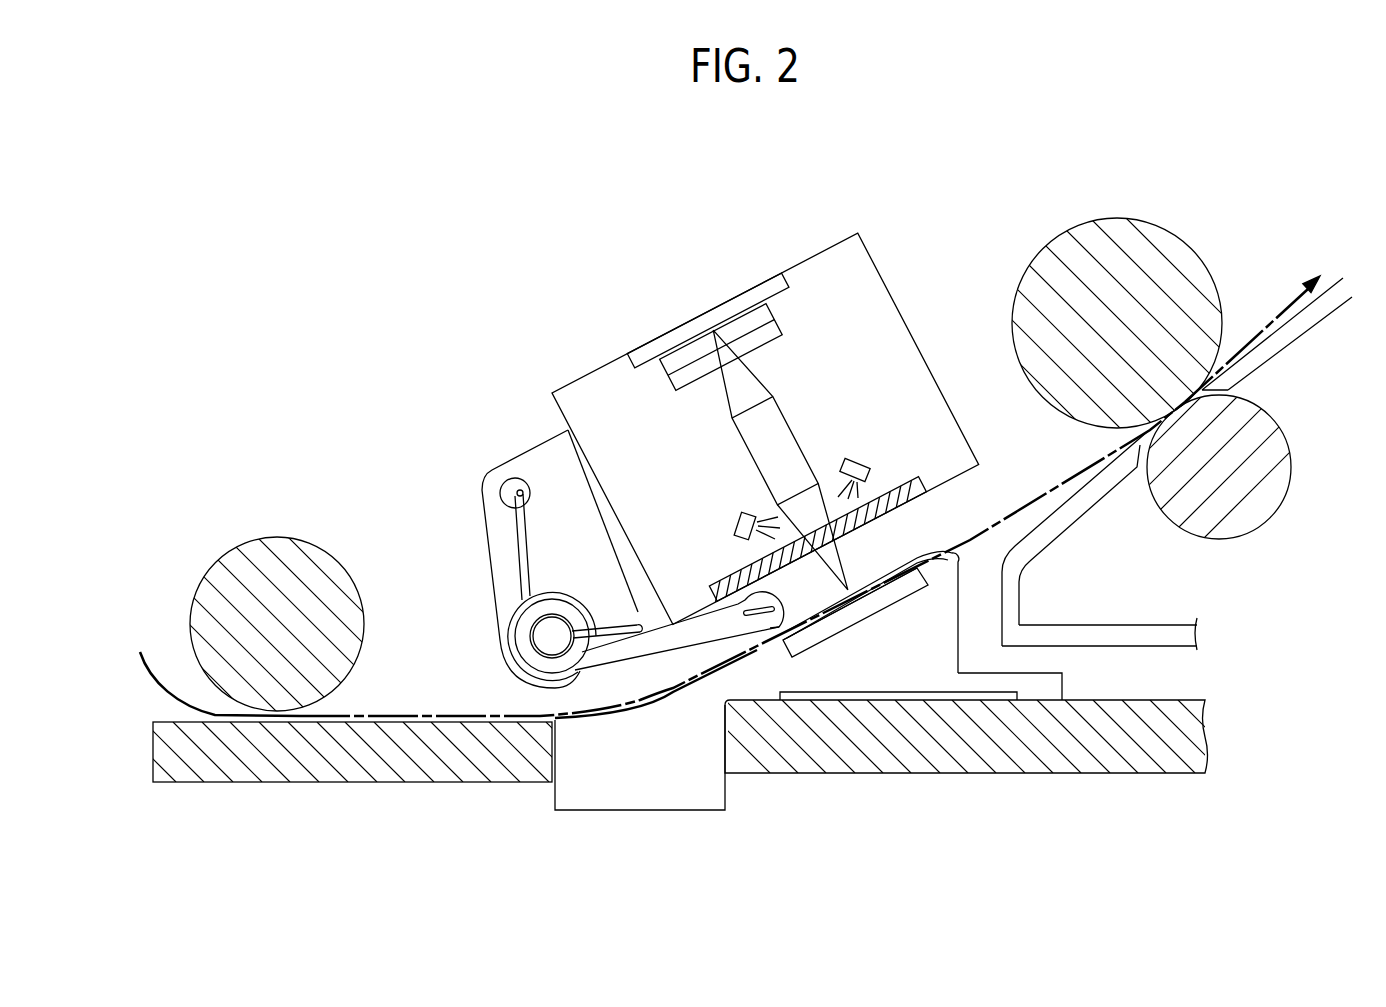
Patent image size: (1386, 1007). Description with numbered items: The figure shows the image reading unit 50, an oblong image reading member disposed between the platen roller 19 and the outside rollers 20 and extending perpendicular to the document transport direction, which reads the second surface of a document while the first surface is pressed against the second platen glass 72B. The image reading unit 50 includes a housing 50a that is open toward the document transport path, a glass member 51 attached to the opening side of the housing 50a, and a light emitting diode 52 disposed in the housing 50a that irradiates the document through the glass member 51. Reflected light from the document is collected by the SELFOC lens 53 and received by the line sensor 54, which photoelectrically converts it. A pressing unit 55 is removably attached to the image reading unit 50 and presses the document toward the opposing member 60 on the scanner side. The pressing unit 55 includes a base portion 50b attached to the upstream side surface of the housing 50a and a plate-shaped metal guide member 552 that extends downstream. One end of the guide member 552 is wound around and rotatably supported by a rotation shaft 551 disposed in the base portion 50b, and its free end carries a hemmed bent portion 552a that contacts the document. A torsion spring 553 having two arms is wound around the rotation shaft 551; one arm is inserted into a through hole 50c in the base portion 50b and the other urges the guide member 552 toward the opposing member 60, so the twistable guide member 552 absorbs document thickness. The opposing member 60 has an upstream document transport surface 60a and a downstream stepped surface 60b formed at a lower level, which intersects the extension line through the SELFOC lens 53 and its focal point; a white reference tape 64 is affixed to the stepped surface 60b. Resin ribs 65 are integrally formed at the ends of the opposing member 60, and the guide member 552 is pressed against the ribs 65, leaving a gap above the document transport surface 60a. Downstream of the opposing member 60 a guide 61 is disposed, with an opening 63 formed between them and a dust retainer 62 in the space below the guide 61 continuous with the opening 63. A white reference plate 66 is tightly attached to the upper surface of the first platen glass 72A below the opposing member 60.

The platen roller 19 is at (264, 540).
The outside rollers 20 is at (1098, 217).
The image reading unit 50 is at (746, 410).
The housing 50a is at (915, 343).
The base portion 50b is at (543, 462).
The through hole 50c is at (500, 485).
The glass member 51 is at (913, 477).
The light emitting diode (LED) 52 is at (858, 457).
The SELFOC lens 53 is at (795, 430).
The line sensor 54 is at (770, 306).
The pressing unit 55 is at (548, 621).
The opposing member 60 is at (656, 773).
The document transport surface 60a is at (614, 722).
The stepped surface 60b is at (873, 617).
The guide 61 is at (1157, 624).
The dust retainer 62 is at (1040, 662).
The opening 63 is at (980, 572).
The white reference tape 64 is at (805, 642).
The ribs 65 is at (935, 556).
The white reference plate 66 is at (942, 695).
The first platen glass 72A is at (1168, 776).
The second platen glass 72B is at (215, 784).
The rotation shaft 551 is at (545, 637).
The guide member 552 is at (679, 724).
The bent portion 552a is at (757, 652).
The torsion spring 553 is at (516, 532).